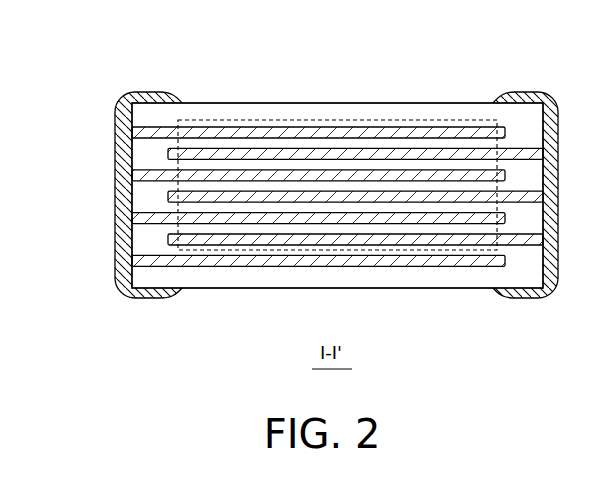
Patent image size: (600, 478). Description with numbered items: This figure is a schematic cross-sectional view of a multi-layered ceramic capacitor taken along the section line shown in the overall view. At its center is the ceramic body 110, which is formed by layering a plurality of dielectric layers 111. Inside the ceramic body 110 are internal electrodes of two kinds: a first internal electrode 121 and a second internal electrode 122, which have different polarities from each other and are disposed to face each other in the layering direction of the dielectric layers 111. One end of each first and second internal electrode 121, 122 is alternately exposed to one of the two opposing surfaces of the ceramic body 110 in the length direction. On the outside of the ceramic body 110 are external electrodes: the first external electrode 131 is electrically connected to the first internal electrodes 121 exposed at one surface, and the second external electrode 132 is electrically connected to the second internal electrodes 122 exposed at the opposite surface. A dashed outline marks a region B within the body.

The ceramic body 110 is at (301, 103).
The dielectric layer 111 is at (150, 199).
The first internal electrode 121 is at (131, 133).
The second internal electrode 122 is at (162, 155).
The first external electrode 131 is at (150, 92).
The second external electrode 132 is at (519, 92).
The region B is at (363, 120).